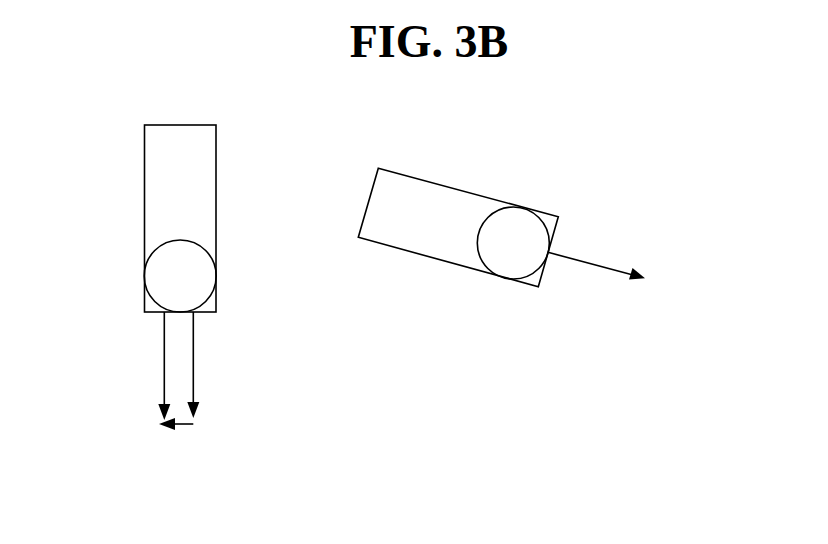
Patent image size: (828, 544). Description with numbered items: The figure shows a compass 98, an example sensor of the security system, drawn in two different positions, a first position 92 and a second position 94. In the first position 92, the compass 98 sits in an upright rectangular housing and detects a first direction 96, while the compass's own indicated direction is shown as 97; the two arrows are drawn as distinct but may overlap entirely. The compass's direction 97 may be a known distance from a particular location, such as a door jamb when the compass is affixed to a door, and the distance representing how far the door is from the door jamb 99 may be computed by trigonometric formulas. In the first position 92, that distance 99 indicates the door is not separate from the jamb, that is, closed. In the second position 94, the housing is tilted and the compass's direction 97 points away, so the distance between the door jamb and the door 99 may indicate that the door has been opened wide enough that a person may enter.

The first position 92 is at (181, 206).
The second position 94 is at (458, 193).
The first direction 96 is at (332, 366).
The compass's direction 97 is at (416, 324).
The compass 98 is at (326, 259).
The distance between the door jamb and the door 99 is at (407, 422).